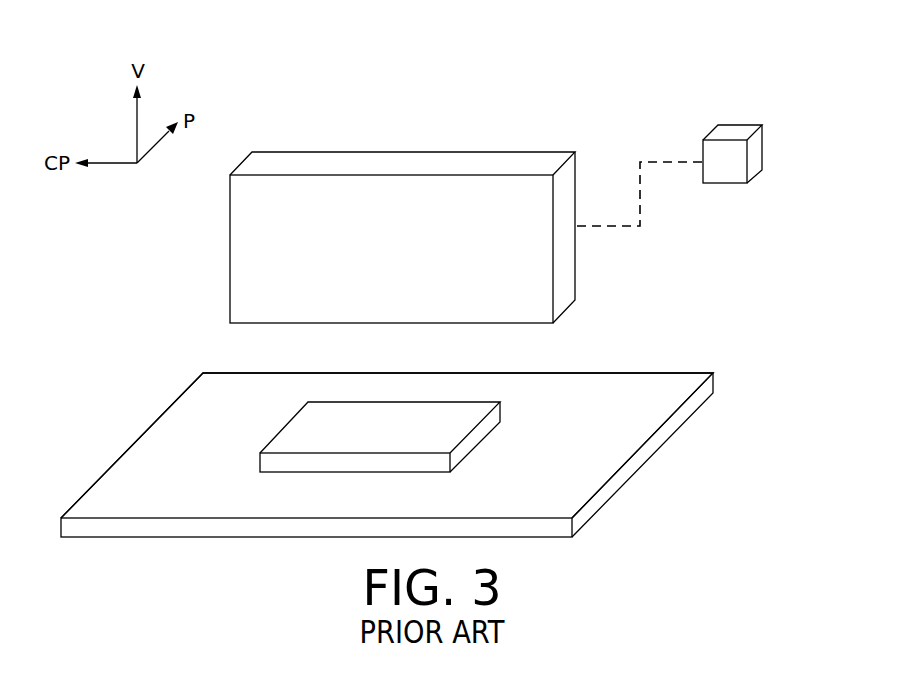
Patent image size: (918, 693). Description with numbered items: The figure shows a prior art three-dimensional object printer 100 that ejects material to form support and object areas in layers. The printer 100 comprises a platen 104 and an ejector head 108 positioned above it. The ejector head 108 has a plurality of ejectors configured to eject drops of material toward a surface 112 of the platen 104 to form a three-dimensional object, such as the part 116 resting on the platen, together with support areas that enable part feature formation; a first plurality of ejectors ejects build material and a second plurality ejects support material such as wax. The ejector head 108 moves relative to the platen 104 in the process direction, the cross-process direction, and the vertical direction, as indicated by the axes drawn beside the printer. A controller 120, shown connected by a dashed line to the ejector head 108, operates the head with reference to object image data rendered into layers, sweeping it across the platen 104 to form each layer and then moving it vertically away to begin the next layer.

The three-dimensional object printer 100 is at (280, 38).
The platen 104 is at (717, 380).
The ejector head 108 is at (402, 163).
The surface 112 is at (147, 453).
The part 116 is at (327, 413).
The controller 120 is at (732, 131).